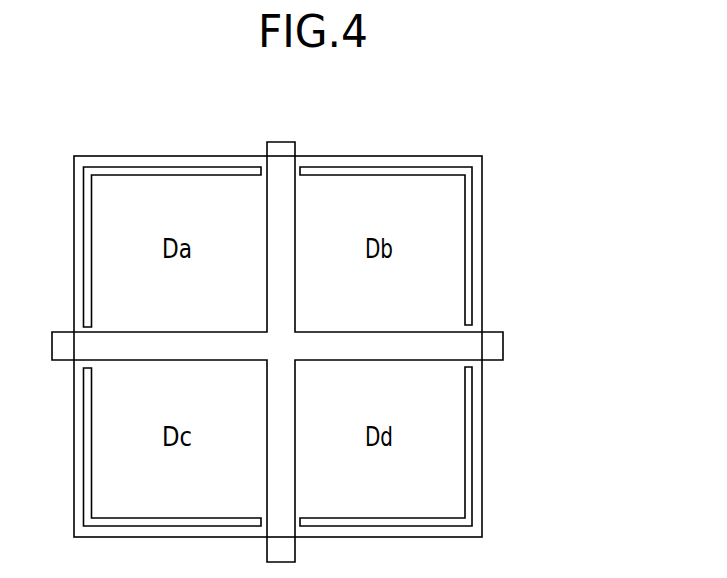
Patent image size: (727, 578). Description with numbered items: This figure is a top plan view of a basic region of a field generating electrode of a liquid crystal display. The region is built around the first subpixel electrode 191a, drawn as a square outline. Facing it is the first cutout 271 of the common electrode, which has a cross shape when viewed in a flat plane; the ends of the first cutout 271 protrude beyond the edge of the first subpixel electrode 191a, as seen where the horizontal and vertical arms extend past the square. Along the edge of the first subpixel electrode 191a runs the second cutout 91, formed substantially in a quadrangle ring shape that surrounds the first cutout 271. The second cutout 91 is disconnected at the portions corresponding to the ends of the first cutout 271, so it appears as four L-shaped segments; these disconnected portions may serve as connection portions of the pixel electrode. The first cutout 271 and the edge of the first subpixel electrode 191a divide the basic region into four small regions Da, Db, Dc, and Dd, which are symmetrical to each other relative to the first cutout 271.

The first subpixel electrode 191a is at (423, 155).
The second cutout 91 is at (465, 206).
The first cutout 271 is at (432, 333).